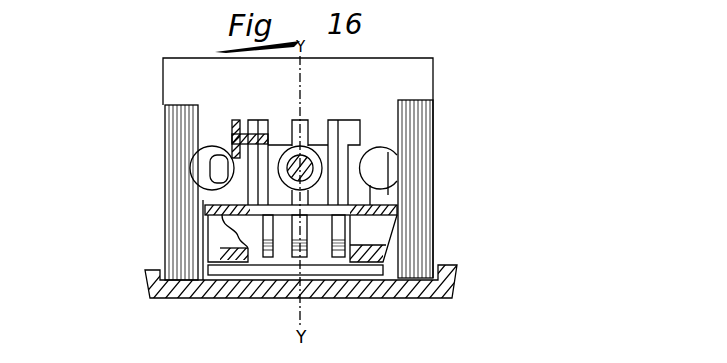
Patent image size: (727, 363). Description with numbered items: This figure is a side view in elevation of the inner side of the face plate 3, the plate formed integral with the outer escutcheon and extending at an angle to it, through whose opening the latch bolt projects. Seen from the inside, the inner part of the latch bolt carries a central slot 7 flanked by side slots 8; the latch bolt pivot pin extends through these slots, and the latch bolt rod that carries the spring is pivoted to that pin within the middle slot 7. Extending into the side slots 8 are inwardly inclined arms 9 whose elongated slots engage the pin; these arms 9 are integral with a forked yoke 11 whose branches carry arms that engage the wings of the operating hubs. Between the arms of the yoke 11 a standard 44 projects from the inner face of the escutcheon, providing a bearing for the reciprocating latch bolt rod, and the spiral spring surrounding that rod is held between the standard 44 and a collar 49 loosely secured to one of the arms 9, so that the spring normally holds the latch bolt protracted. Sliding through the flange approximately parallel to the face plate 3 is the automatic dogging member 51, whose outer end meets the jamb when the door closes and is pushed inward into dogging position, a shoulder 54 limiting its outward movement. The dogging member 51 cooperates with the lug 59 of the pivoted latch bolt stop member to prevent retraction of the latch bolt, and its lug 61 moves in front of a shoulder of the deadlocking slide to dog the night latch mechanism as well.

The face plate 3 is at (412, 77).
The central slot 7 is at (300, 118).
The side slots 8 is at (267, 118).
The inwardly inclined arms 9 is at (255, 190).
The forked yoke 11 is at (213, 212).
The standard 44 is at (396, 170).
The collar 49 is at (307, 152).
The automatic dogging member 51 is at (216, 162).
The shoulder 54 is at (240, 175).
The lug 59 is at (237, 137).
The lug 61 is at (220, 213).